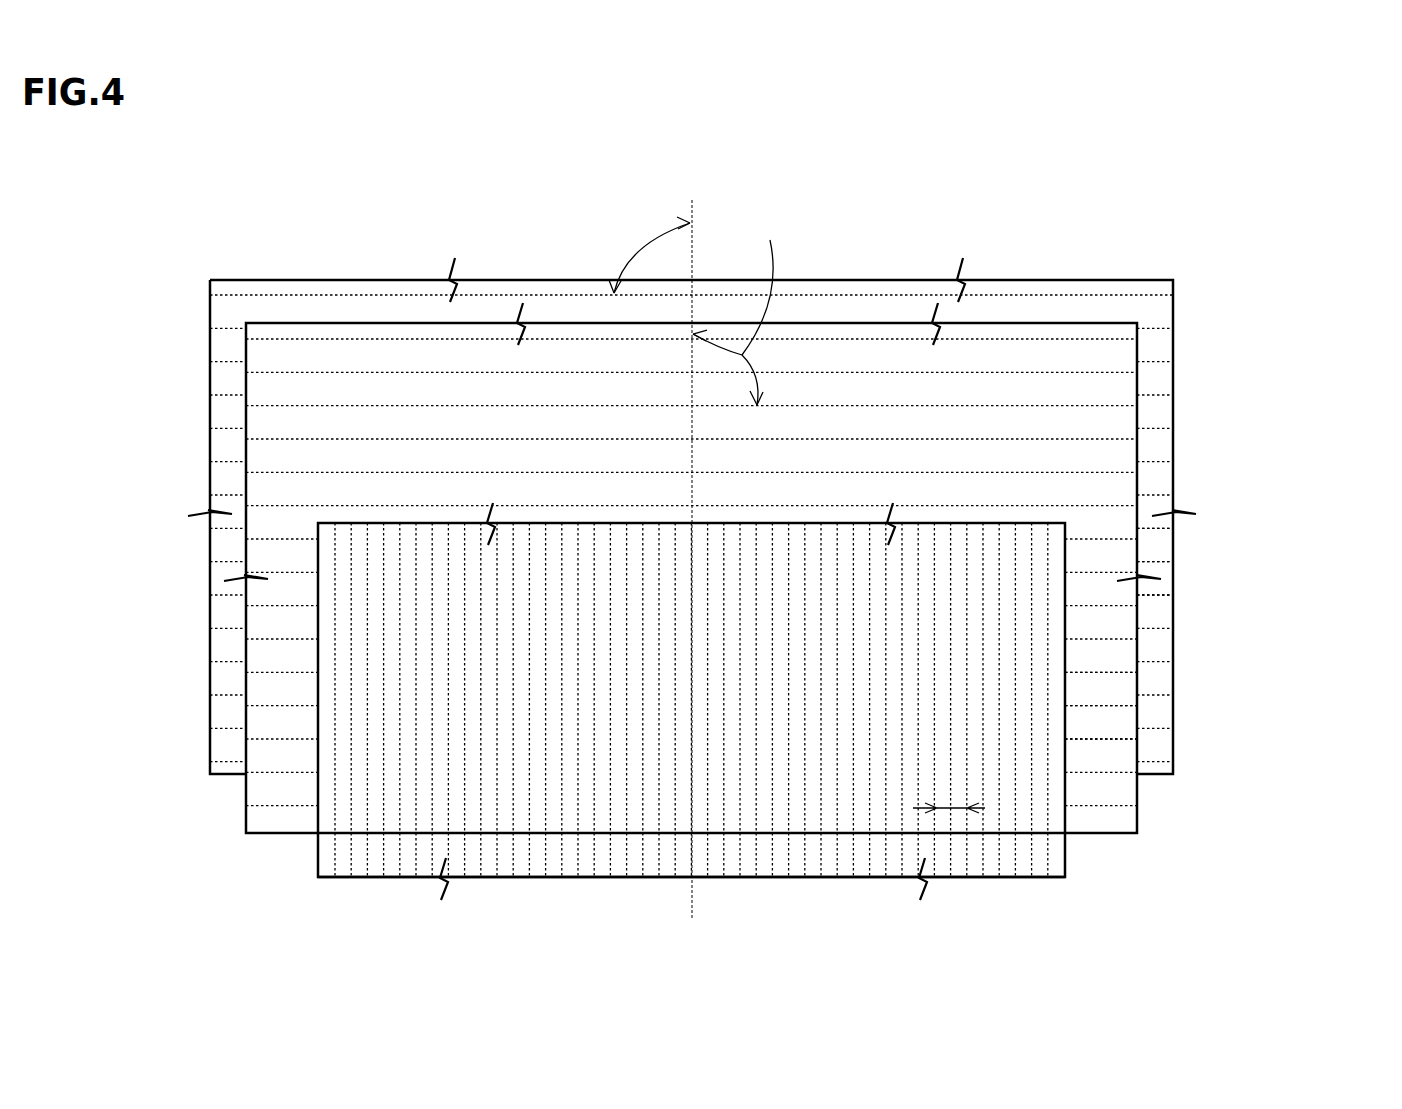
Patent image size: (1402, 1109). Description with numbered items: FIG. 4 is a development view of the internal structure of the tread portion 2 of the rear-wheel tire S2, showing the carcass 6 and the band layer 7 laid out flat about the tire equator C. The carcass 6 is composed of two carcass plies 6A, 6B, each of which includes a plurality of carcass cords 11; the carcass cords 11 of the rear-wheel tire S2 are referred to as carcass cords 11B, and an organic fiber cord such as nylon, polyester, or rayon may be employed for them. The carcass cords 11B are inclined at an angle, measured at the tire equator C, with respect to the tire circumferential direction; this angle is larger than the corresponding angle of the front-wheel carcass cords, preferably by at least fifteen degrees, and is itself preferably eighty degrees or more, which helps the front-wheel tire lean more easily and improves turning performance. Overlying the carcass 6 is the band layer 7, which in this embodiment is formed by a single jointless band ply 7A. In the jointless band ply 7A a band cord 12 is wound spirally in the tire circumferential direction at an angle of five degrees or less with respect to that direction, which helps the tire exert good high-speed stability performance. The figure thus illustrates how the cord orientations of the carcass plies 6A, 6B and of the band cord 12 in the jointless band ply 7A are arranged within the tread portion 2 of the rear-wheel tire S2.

The rear-wheel tire S2 is at (1237, 170).
The tread portion 2 is at (1108, 228).
The tire equator C is at (692, 545).
The carcass 6 is at (1333, 360).
The carcass ply 6A is at (1155, 415).
The carcass ply 6B is at (1122, 493).
The carcass cords 11 is at (1292, 738).
The carcass cords 11B is at (1153, 598).
The band layer 7 is at (1038, 853).
The jointless band ply 7A is at (1065, 895).
The band cord 12 is at (783, 827).